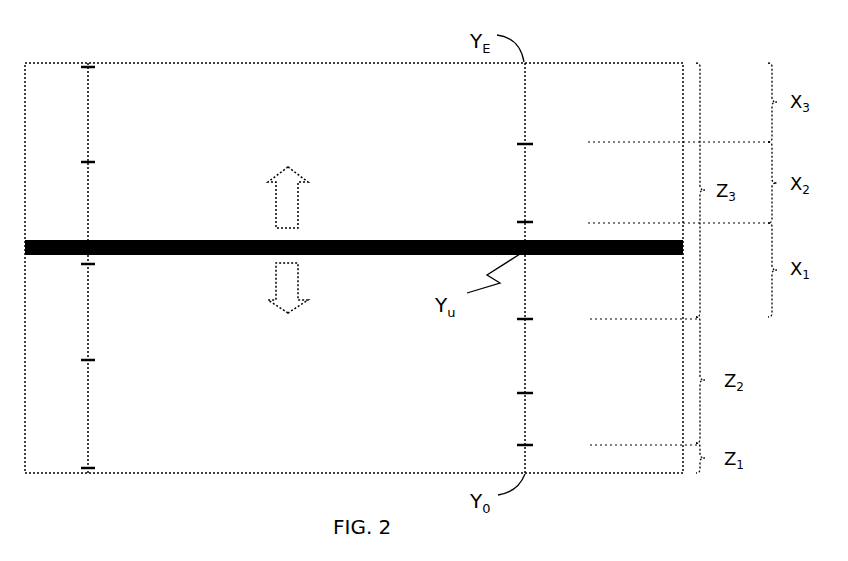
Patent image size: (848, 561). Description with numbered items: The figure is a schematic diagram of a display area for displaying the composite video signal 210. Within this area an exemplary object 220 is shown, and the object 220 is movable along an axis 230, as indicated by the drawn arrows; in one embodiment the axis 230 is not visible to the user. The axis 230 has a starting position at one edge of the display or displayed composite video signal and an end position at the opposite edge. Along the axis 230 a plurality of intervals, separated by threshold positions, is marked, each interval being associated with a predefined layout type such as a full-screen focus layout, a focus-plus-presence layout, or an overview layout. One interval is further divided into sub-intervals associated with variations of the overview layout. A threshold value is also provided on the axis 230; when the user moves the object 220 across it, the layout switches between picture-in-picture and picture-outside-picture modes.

The composite video signal 210 is at (270, 55).
The object 220 is at (243, 232).
The axis 230 is at (523, 93).